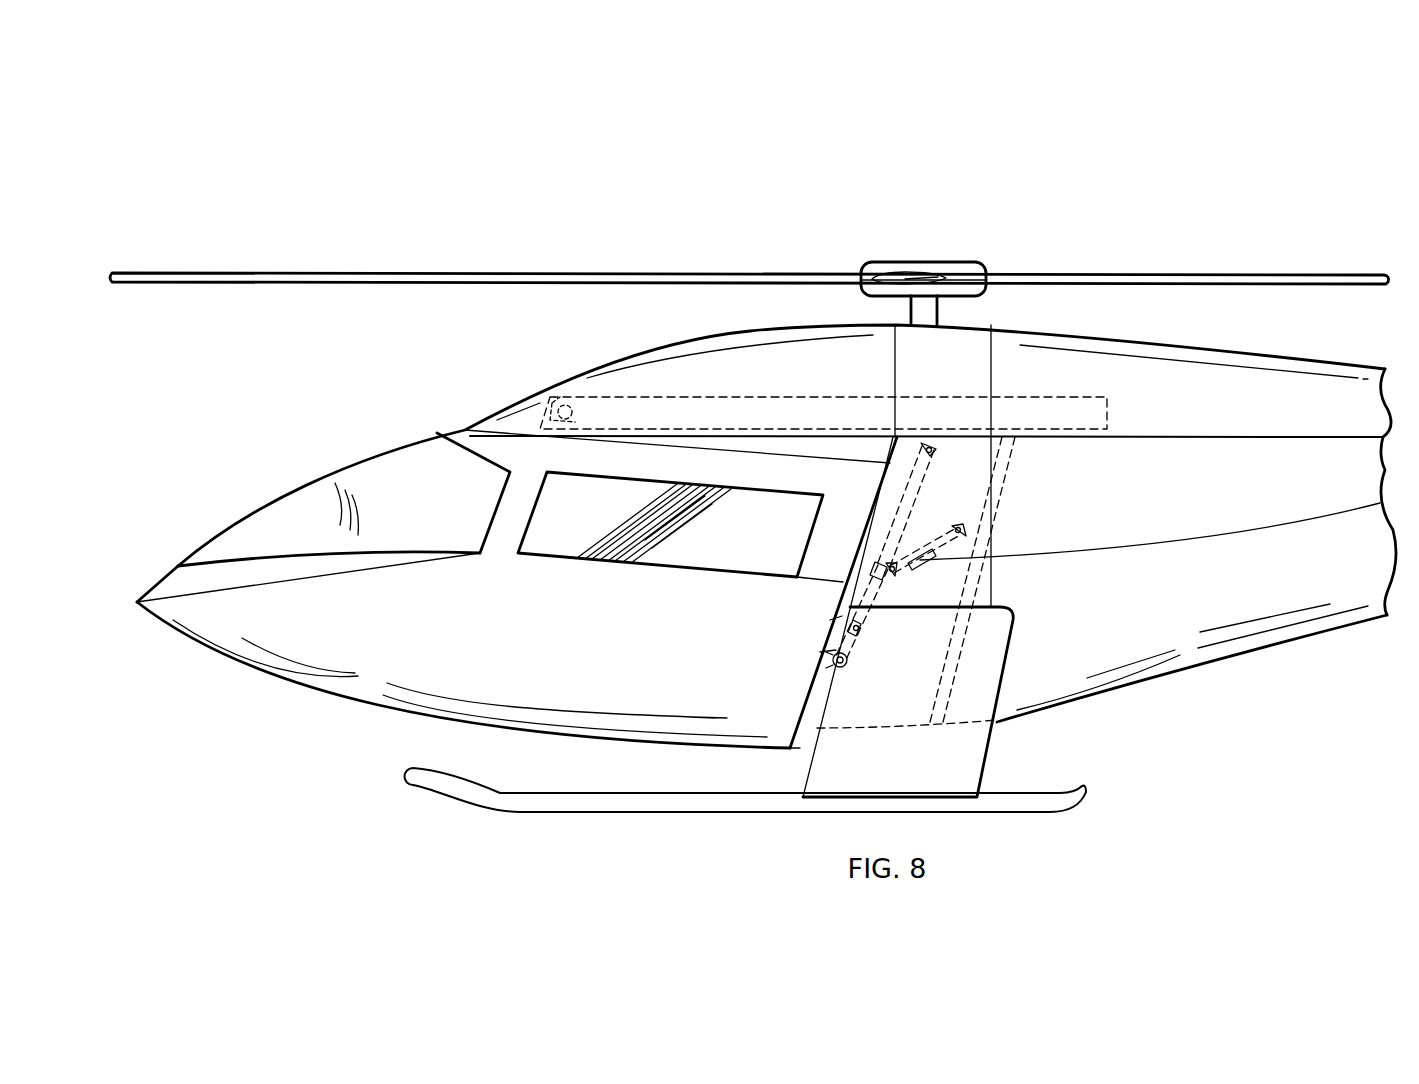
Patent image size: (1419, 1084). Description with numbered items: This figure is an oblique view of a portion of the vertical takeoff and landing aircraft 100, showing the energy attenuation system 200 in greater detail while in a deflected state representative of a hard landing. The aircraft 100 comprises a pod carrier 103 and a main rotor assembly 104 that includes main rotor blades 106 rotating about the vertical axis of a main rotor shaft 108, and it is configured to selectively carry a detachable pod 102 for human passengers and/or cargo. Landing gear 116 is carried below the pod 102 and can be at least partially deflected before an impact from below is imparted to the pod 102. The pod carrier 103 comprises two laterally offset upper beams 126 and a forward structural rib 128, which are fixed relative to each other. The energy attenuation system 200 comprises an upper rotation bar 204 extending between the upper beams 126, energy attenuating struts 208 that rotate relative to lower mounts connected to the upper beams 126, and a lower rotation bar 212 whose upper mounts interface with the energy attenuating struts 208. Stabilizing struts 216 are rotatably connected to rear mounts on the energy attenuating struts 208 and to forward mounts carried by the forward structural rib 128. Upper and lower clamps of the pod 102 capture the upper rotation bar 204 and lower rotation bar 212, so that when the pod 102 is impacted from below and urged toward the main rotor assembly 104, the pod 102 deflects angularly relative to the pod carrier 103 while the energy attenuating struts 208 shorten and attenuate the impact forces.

The vertical takeoff and landing (VTOL) aircraft 100 is at (583, 187).
The detachable pod 102 is at (372, 672).
The pod carrier 103 is at (1188, 635).
The main rotor assembly 104 is at (908, 258).
The main rotor blades 106 is at (1165, 271).
The main rotor shaft 108 is at (942, 312).
The landing gear 116 is at (652, 812).
The upper beams 126 is at (1117, 410).
The forward structural rib 128 is at (1015, 462).
The energy attenuation system (EAS) 200 is at (1006, 513).
The upper rotation bar 204 is at (578, 400).
The energy attenuating struts 208 is at (878, 587).
The lower rotation bar 212 is at (852, 670).
The stabilizing struts 216 is at (935, 530).